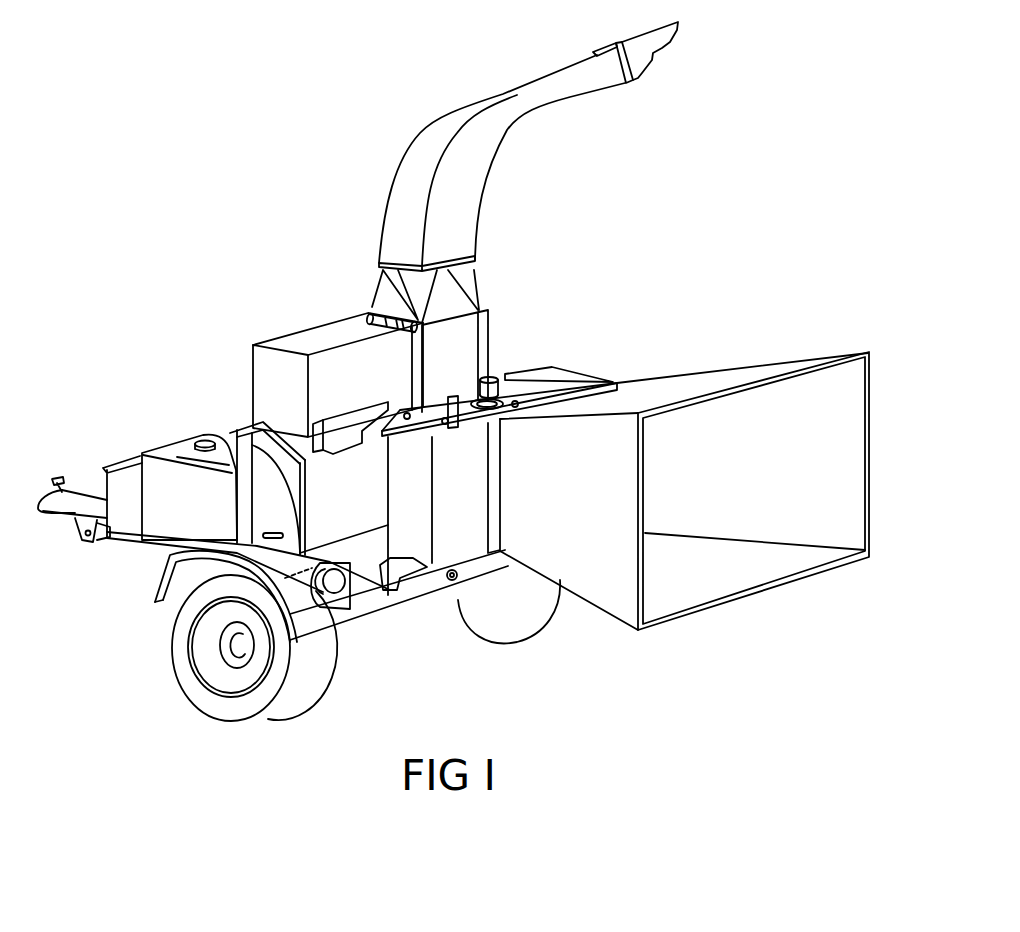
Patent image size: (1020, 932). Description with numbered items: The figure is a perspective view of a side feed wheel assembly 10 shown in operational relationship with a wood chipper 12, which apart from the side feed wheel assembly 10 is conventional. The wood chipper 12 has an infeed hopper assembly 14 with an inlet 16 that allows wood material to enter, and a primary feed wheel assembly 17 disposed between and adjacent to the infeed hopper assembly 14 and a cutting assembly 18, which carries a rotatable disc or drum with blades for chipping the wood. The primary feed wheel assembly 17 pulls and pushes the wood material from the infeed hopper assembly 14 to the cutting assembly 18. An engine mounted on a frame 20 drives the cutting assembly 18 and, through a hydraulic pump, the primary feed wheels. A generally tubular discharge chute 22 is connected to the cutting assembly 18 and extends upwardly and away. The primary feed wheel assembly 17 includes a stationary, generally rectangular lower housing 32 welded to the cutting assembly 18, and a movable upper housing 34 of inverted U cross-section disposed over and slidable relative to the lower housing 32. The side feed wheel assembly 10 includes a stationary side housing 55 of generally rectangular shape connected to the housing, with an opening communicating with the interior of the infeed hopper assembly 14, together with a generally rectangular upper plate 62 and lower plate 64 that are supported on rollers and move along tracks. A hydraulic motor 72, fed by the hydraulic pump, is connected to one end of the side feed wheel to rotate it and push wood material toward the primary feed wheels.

The side feed wheel assembly 10 is at (627, 338).
The wood chipper 12 is at (233, 393).
The infeed hopper assembly 14 is at (782, 360).
The inlet 16 is at (843, 515).
The primary feed wheel assembly 17 is at (528, 372).
The cutting assembly 18 is at (317, 338).
The frame 20 is at (372, 618).
The discharge chute 22 is at (410, 175).
The lower housing 32 is at (507, 532).
The upper housing 34 is at (592, 380).
The side housing 55 is at (388, 505).
The upper plate 62 is at (432, 437).
The lower plate 64 is at (430, 545).
The hydraulic motor 72 is at (487, 375).